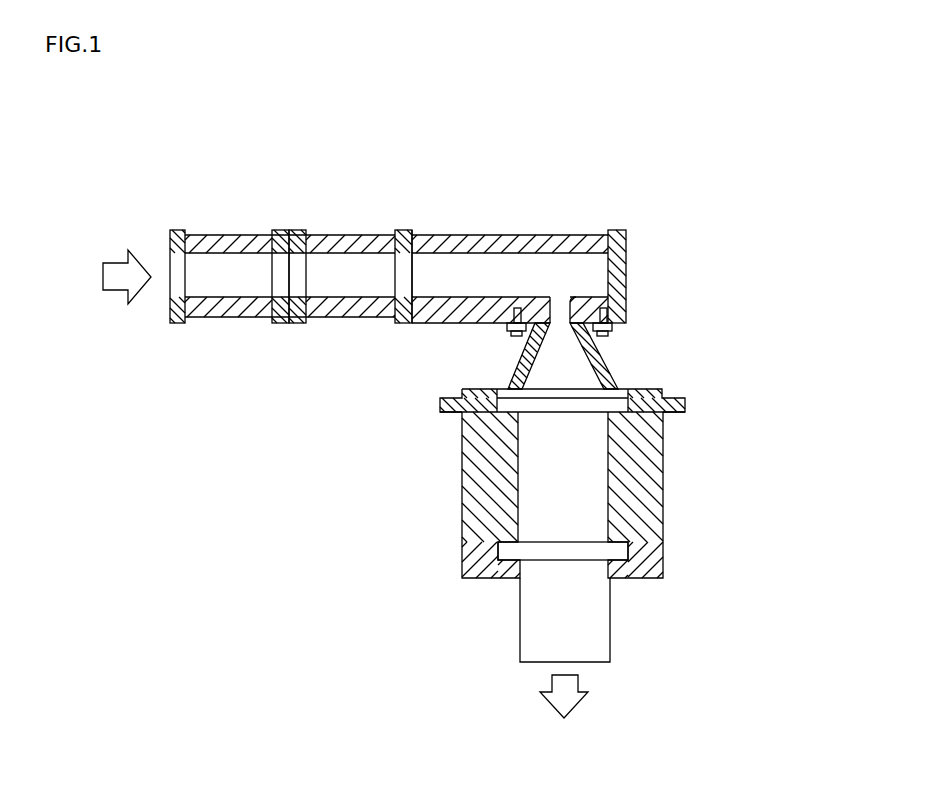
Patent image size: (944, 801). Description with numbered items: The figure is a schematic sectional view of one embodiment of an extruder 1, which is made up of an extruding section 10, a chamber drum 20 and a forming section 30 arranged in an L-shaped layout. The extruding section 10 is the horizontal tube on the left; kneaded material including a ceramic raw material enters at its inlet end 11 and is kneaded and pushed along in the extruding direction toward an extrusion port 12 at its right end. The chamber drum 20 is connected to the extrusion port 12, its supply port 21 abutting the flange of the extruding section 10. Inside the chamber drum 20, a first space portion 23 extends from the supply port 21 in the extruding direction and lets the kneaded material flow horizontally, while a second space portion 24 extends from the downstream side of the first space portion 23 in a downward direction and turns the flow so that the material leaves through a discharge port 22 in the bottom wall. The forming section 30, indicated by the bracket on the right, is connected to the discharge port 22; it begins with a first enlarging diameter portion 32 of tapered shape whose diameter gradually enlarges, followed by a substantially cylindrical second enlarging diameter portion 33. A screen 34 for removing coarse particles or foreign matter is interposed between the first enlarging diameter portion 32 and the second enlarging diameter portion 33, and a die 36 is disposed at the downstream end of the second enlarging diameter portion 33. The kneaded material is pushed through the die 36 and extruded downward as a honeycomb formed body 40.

The extruder 1 is at (632, 136).
The extruding section 10 is at (405, 221).
The inlet flange 11 is at (173, 278).
The extrusion port 12 is at (403, 277).
The chamber drum 20 is at (625, 221).
The supply port 21 is at (412, 285).
The discharge port 22 is at (563, 318).
The first space portion 23 is at (530, 268).
The second space portion 24 is at (566, 303).
The forming section 30 is at (767, 333).
The first enlarging diameter portion 32 is at (552, 363).
The second enlarging diameter portion 33 is at (535, 473).
The screen 34 is at (613, 403).
The die 36 is at (613, 553).
The honeycomb formed body 40 is at (595, 623).